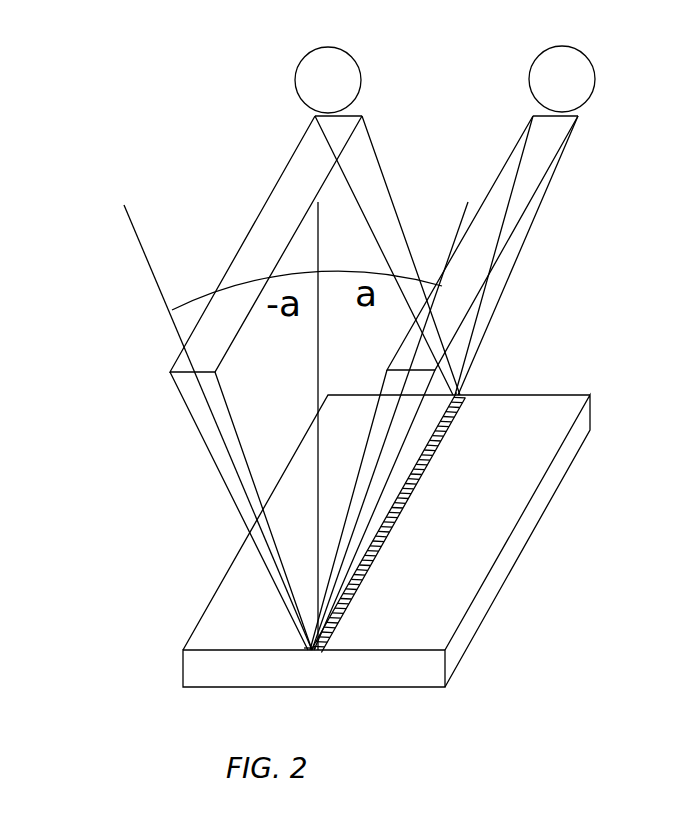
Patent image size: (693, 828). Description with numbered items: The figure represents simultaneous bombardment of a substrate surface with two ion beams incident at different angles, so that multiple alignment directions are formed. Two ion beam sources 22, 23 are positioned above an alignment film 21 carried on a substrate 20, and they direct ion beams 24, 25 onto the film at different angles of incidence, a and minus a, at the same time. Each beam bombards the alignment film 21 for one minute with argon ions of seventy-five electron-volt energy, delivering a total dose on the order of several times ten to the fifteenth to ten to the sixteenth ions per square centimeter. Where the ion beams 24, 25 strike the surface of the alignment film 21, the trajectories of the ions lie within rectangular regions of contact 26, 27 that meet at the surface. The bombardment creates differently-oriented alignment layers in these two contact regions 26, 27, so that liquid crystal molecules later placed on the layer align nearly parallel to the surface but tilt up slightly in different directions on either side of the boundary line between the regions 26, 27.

The substrate 20 is at (537, 507).
The alignment film 21 is at (525, 435).
The ion beam source 22 is at (570, 83).
The ion beam source 23 is at (303, 82).
The ion beam 24 is at (512, 257).
The ion beam 25 is at (200, 412).
The region of contact 26 is at (338, 622).
The region of contact 27 is at (304, 647).